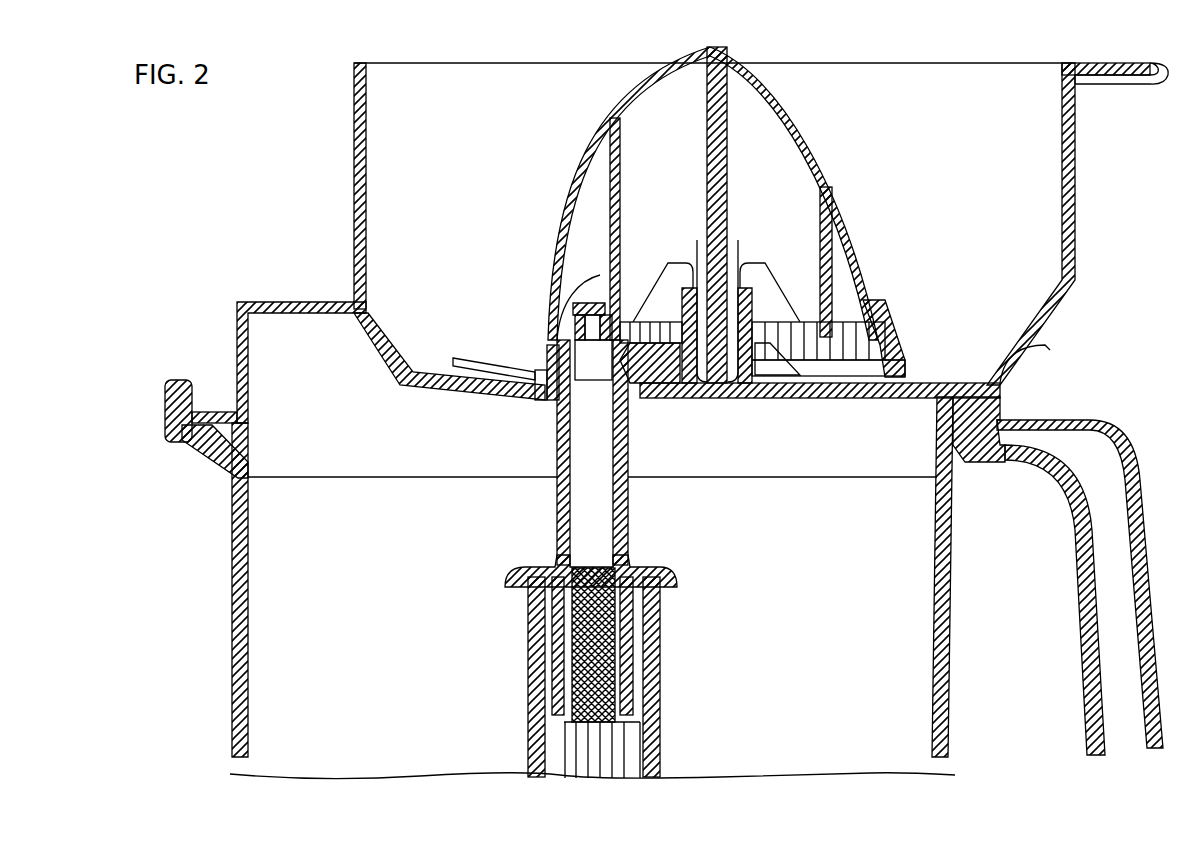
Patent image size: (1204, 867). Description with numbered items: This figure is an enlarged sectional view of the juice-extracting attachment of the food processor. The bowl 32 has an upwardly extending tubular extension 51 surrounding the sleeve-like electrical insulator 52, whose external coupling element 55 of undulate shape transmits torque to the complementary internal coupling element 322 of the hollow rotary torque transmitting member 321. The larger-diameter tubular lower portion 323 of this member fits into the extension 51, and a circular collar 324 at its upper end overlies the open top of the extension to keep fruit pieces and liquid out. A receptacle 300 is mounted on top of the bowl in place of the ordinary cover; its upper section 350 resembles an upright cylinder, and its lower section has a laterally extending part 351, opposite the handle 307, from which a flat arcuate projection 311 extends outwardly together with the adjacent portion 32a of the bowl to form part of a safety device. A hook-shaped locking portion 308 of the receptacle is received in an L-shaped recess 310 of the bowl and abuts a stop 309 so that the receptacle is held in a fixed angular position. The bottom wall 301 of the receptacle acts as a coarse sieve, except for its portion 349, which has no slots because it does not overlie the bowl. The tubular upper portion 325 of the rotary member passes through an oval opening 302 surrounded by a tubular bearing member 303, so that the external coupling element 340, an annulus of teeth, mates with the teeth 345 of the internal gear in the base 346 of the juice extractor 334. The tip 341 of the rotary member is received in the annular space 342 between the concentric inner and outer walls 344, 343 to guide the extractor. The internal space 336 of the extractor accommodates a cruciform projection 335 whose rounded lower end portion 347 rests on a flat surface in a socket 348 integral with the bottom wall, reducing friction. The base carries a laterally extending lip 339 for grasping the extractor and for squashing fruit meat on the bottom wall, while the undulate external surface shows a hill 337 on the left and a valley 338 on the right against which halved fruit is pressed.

The receptacle 300 is at (716, 226).
The bottom wall 301 is at (905, 383).
The oval opening 302 is at (545, 390).
The tubular bearing member 303 is at (530, 393).
The handle 307 is at (1152, 68).
The hook-shaped locking portion 308 is at (1003, 420).
The stop 309 is at (1012, 458).
The L-shaped recess 310 is at (965, 433).
The arcuate projection 311 is at (203, 378).
The rotary torque transmitting member 321 is at (592, 559).
The internal coupling element 322 is at (632, 623).
The tubular lower portion 323 is at (622, 714).
The circular collar 324 is at (665, 570).
The tubular upper portion 325 is at (630, 460).
The juice extractor 334 is at (690, 215).
The projection or shank 335 is at (700, 186).
The internal space 336 is at (780, 170).
The hill 337 is at (572, 230).
The valley 338 is at (835, 193).
The lip 339 is at (458, 360).
The external coupling element 340 is at (662, 383).
The tip 341 is at (562, 298).
The annular space 342 is at (848, 300).
The outer wall 343 is at (605, 298).
The inner wall 344 is at (882, 310).
The teeth 345 is at (900, 336).
The base 346 is at (893, 358).
The rounded lower end portion 347 is at (750, 385).
The socket 348 is at (768, 340).
The portion of the bottom wall 349 is at (1040, 344).
The upper section 350 is at (354, 176).
The laterally extending part 351 is at (275, 300).
The bowl 32 is at (664, 556).
The portion of the bowl 32a is at (226, 450).
The tubular extension 51 is at (662, 684).
The electrical insulator 52 is at (600, 745).
The coupling element 55 is at (602, 663).